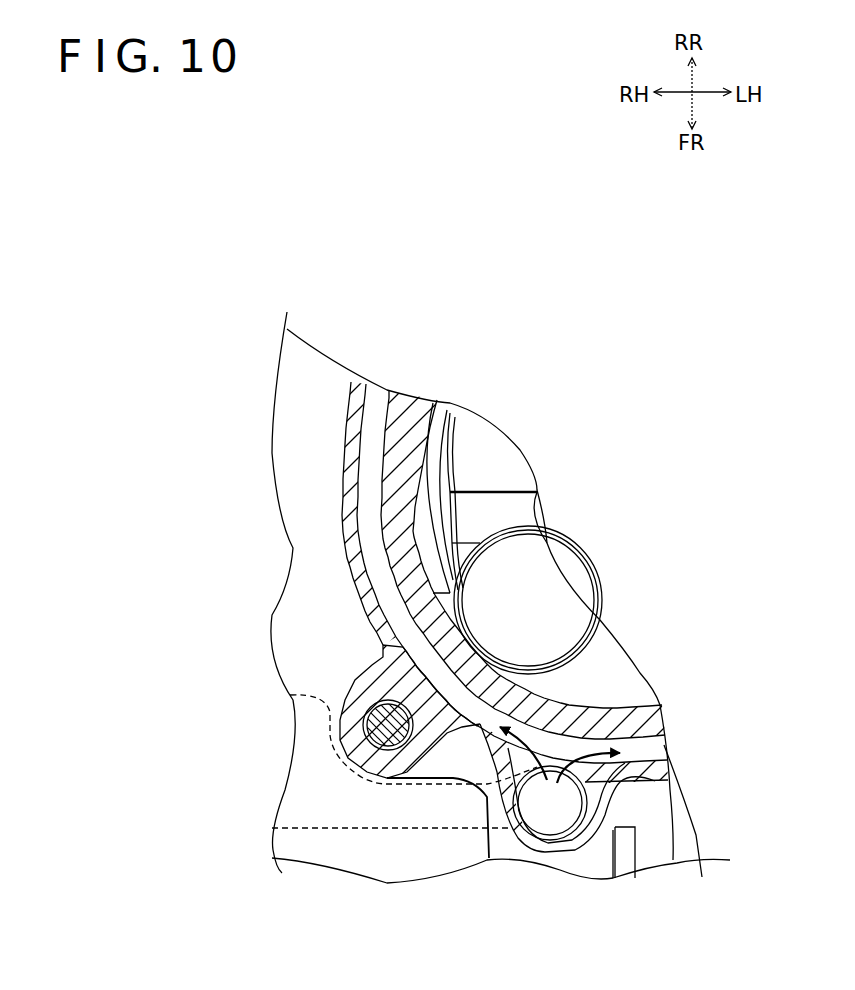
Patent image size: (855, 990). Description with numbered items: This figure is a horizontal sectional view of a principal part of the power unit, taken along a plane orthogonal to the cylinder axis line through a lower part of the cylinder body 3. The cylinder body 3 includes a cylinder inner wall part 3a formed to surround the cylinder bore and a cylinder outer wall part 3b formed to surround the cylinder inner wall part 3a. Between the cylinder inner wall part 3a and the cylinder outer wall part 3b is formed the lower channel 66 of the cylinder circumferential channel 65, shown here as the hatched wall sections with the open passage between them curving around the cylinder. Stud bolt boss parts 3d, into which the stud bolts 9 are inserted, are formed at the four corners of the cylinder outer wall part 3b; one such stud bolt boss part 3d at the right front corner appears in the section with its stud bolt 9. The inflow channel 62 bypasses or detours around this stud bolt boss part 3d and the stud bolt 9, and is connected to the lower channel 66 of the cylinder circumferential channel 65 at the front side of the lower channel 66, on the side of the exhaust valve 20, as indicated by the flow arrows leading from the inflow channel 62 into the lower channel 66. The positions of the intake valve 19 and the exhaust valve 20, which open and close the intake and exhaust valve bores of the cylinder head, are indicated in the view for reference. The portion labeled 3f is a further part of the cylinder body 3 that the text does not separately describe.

The cylinder body 3 is at (353, 548).
The cylinder inner wall part 3a is at (673, 860).
The cylinder outer wall part 3b is at (372, 595).
The stud bolt boss part 3d is at (388, 770).
The bulging wall portion 3f is at (567, 848).
The stud bolt 9 is at (340, 767).
The intake valve 19 is at (488, 450).
The exhaust valve 20 is at (538, 567).
The inflow channel 62 is at (352, 805).
The cylinder circumferential channel 65 is at (454, 577).
The lower channel 66 is at (377, 453).